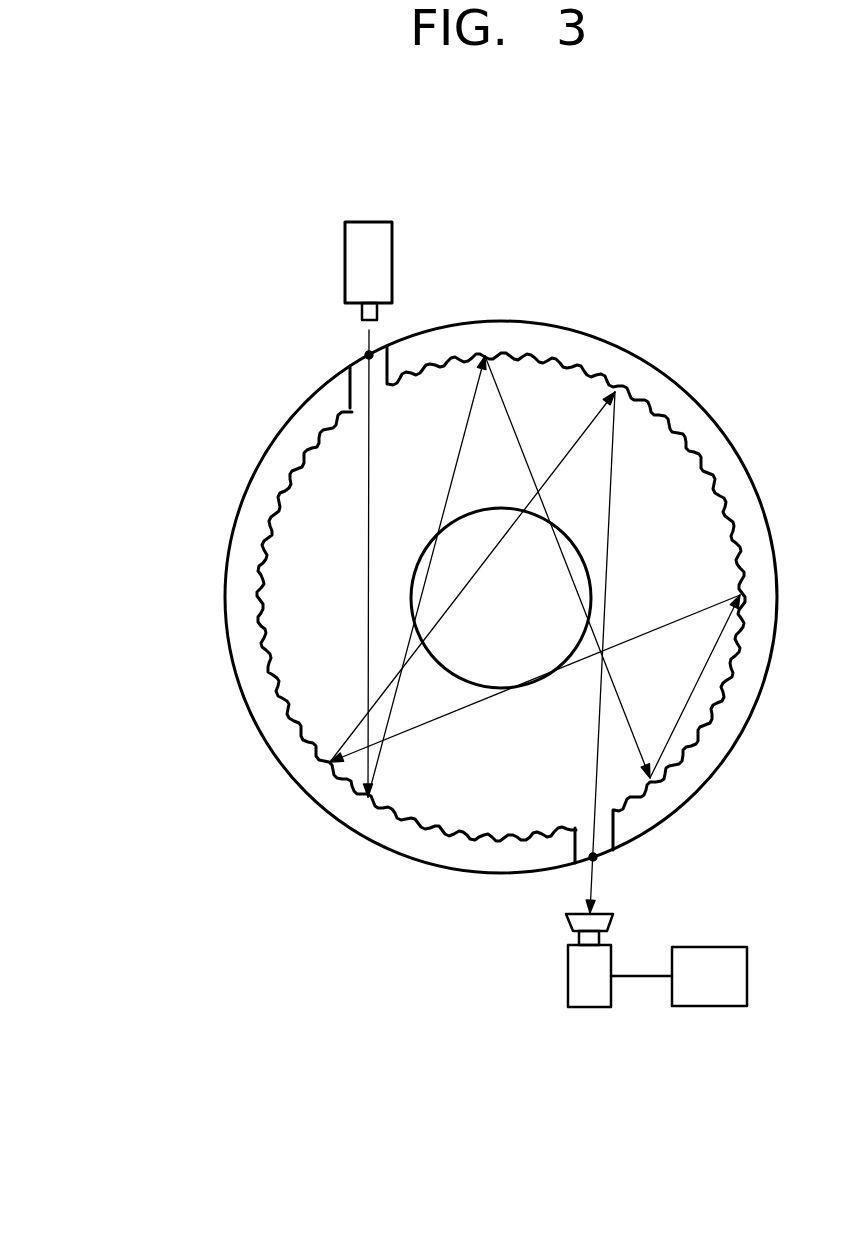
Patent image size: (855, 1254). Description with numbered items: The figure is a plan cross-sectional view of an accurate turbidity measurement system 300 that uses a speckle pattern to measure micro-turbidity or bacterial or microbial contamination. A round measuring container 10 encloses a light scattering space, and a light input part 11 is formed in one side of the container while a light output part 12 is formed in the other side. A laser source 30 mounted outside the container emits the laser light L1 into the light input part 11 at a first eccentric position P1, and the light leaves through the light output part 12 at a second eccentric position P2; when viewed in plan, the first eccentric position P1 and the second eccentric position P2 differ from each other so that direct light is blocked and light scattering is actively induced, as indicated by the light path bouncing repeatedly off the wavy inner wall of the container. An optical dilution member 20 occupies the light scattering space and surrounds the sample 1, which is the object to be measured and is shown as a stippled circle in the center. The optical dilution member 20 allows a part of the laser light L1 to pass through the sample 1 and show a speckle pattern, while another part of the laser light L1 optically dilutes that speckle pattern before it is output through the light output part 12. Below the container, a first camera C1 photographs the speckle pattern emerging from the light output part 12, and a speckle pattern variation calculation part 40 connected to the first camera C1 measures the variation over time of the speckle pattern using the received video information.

The accurate turbidity measurement system 300 is at (222, 331).
The measuring container 10 is at (263, 693).
The optical dilution member 20 is at (317, 563).
The light input part 11 is at (360, 373).
The light output part 12 is at (604, 842).
The laser source 30 is at (371, 222).
The sample 1 is at (527, 583).
The laser light L1 is at (370, 445).
The first eccentric position P1 is at (371, 353).
The second eccentric position P2 is at (592, 859).
The first camera C1 is at (590, 1008).
The speckle pattern variation calculation part 40 is at (717, 1007).